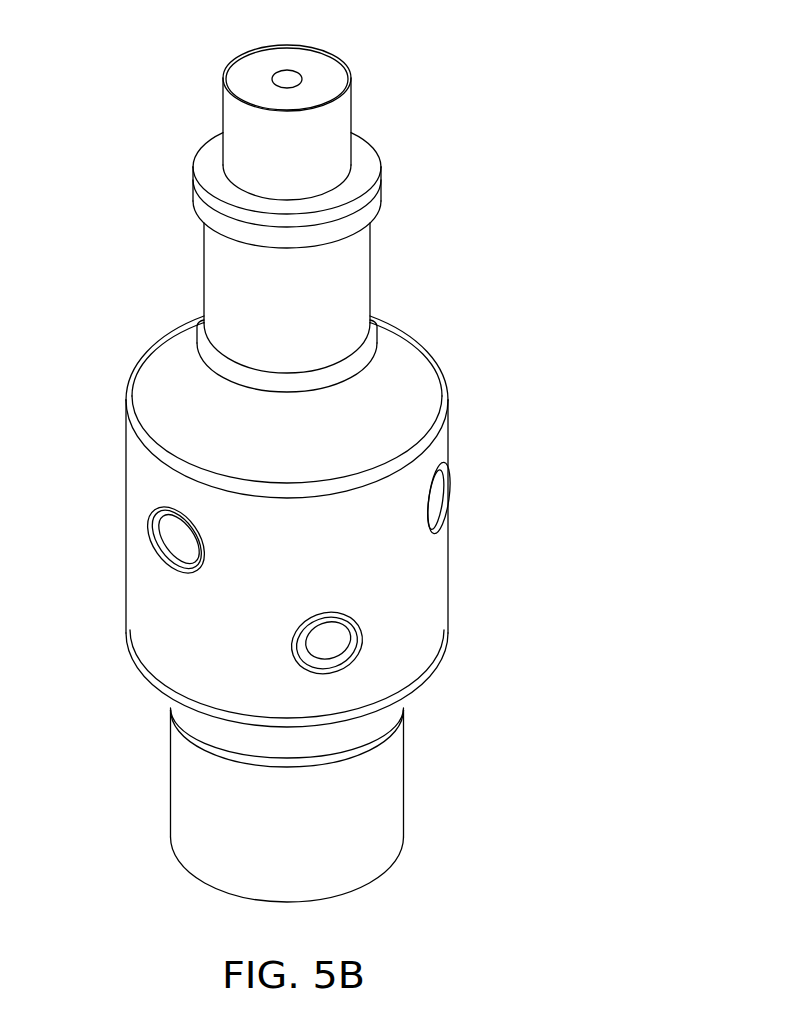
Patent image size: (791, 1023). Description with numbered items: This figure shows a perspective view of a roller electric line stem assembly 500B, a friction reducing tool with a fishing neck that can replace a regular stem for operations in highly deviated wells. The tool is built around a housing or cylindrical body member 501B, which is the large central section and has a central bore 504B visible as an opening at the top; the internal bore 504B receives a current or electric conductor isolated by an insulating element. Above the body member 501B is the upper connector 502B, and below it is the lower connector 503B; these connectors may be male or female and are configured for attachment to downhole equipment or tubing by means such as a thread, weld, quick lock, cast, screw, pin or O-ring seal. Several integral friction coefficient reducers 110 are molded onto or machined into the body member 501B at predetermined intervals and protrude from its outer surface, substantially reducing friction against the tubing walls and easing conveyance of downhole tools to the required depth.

The roller electric line stem assembly 500B is at (164, 340).
The body member 501B is at (443, 650).
The upper connector 502B is at (350, 113).
The lower connector 503B is at (367, 883).
The central bore 504B is at (297, 72).
The friction coefficient reducer 110 is at (450, 500).